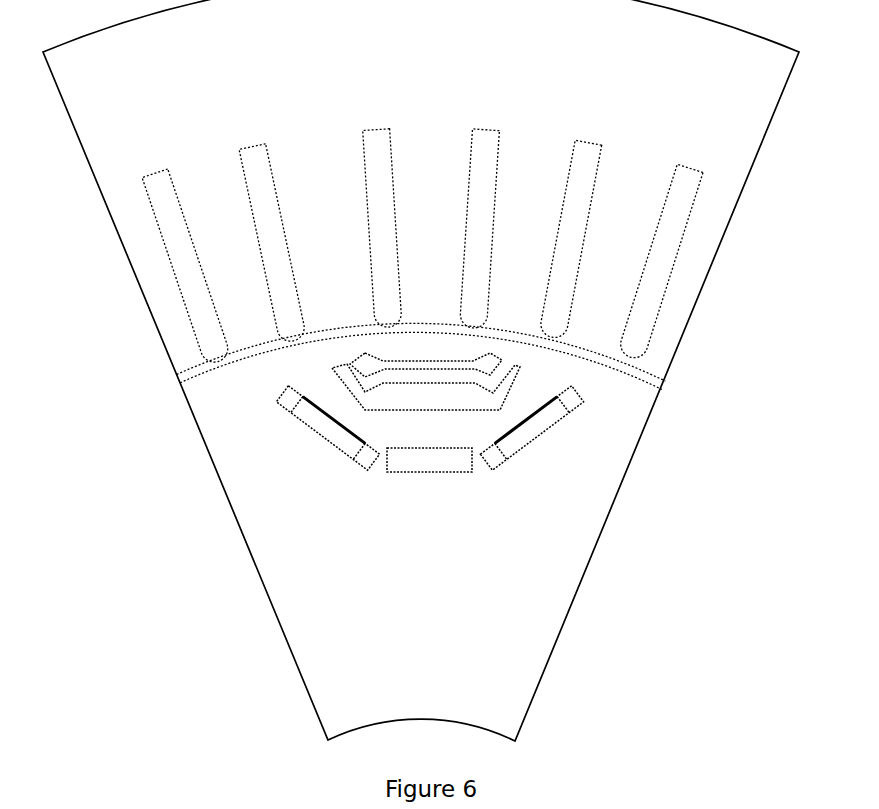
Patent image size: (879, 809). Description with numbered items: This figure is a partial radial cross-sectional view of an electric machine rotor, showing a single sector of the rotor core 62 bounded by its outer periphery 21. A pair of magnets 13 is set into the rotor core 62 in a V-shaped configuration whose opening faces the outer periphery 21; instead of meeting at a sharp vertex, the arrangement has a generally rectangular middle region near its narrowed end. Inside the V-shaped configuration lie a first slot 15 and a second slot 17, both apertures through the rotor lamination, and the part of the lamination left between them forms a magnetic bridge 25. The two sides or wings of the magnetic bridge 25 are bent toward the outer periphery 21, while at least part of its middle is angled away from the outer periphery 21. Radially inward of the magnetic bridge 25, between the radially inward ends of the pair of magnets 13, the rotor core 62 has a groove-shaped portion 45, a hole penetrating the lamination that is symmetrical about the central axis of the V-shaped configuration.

The rotor core 62 is at (605, 535).
The second slot 17 is at (350, 354).
The outer periphery 21 is at (260, 345).
The magnetic bridge 25 is at (502, 383).
The first slot 15 is at (524, 370).
The magnets 13 is at (540, 432).
The groove-shaped portion 45 is at (458, 455).